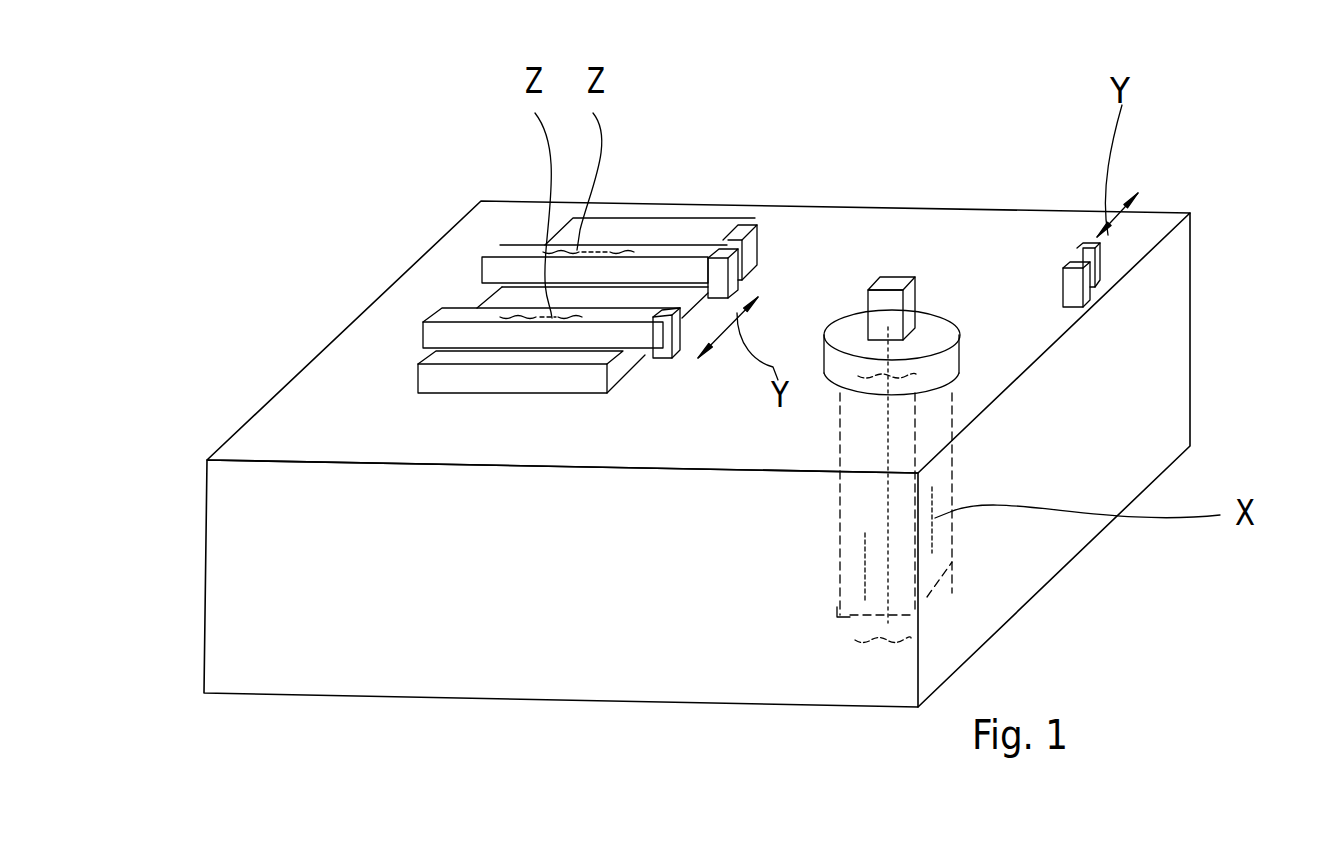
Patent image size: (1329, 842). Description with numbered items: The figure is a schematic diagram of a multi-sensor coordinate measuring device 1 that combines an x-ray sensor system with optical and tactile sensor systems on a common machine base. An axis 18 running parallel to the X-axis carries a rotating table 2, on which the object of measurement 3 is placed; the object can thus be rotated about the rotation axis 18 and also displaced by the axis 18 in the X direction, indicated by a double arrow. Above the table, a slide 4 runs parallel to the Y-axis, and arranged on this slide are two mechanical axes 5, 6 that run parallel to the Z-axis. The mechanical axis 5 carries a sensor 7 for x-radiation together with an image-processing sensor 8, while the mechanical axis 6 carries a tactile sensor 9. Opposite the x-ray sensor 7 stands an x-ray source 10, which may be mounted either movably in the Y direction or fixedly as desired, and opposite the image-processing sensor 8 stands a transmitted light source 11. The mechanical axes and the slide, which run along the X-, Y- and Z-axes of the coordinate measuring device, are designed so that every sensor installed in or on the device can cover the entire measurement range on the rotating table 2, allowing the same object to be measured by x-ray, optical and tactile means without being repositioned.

The machine tool base 1 is at (863, 583).
The rotating table 2 is at (947, 377).
The object of measurement 3 is at (887, 302).
The slide 4 is at (513, 302).
The mechanical axis 5 is at (500, 250).
The mechanical axis 6 is at (447, 340).
The sensor for x-radiation 7 is at (733, 252).
The image-processing sensor 8 is at (702, 248).
The tactile sensor 9 is at (663, 352).
The x-ray source 10 is at (1100, 257).
The transmitted light source 11 is at (1077, 287).
The axis 18 is at (888, 507).